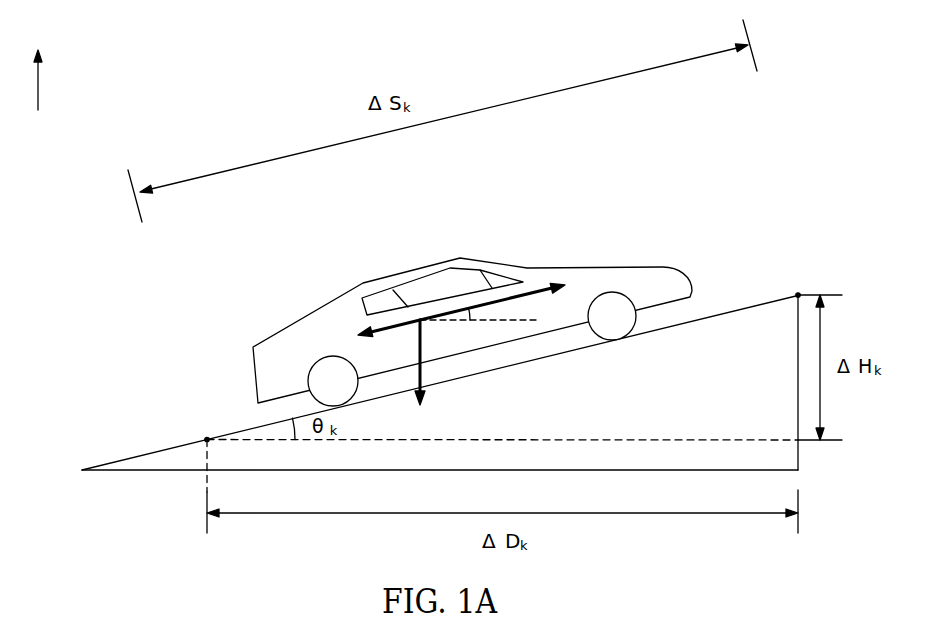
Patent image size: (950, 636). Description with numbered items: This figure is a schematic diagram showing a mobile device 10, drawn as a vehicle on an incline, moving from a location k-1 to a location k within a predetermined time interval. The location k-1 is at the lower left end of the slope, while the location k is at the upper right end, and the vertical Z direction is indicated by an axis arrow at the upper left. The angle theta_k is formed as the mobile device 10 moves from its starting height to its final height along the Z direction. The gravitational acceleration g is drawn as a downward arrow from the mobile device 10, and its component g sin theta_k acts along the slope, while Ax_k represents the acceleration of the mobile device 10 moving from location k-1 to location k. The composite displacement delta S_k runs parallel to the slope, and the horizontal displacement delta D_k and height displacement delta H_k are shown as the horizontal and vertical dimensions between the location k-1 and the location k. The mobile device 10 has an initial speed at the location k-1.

The mobile device 10 is at (472, 288).
The location k is at (798, 295).
The location k-1 is at (207, 440).
The gravitational acceleration g is at (419, 376).
The Z direction Z is at (37, 62).